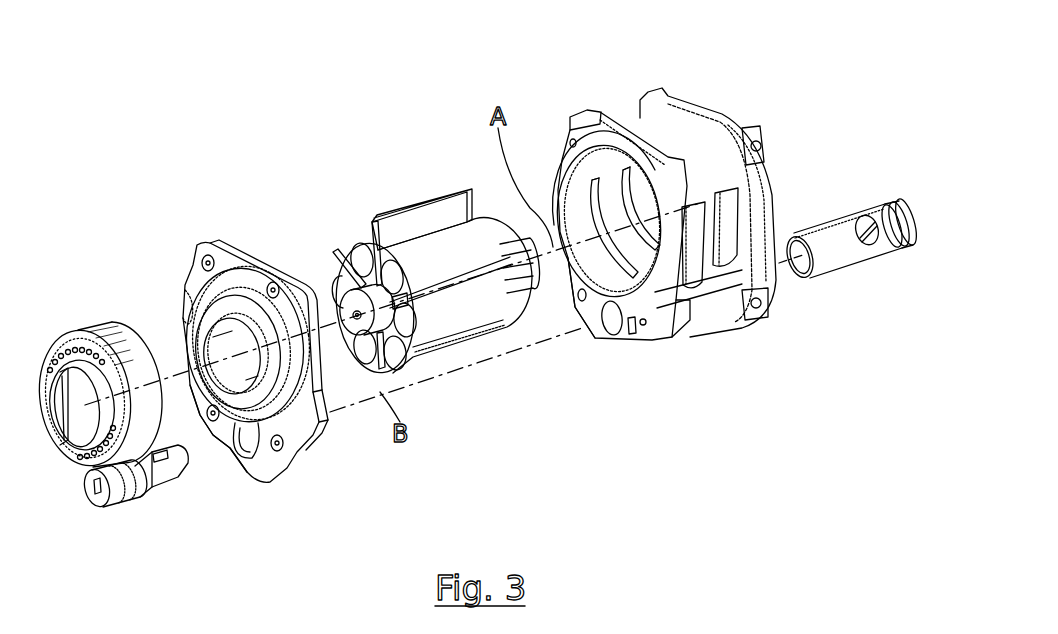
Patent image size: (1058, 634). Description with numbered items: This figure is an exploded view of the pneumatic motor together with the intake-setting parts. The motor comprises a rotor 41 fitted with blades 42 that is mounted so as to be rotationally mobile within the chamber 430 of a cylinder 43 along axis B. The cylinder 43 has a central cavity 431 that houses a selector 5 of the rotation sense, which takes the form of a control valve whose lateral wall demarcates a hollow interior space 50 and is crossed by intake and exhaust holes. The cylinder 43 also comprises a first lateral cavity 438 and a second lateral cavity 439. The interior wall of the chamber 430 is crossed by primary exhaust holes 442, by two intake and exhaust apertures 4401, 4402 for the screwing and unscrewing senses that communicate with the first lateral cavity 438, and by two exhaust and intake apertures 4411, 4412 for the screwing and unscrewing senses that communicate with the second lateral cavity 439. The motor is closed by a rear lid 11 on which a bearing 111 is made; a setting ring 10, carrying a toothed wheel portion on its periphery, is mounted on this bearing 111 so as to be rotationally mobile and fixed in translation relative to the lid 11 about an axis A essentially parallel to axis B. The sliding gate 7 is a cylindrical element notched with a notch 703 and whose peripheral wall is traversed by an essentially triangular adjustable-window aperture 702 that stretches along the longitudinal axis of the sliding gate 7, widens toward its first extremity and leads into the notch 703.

The setting ring 10 is at (101, 330).
The sliding gate 7 is at (140, 493).
The adjustable-window aperture 702 is at (160, 452).
The notch 703 is at (162, 478).
The rear lid 11 is at (253, 393).
The bearing 111 is at (267, 457).
The rotor 41 is at (453, 353).
The blades 42 is at (342, 252).
The cylinder 43 is at (720, 160).
The chamber 430 is at (575, 178).
The intake and exhaust aperture in the screwing sense 4401 is at (602, 160).
The intake and exhaust aperture in the unscrewing sense 4402 is at (630, 185).
The primary exhaust holes 442 is at (627, 182).
The exhaust and intake aperture in the screwing sense 4411 is at (695, 270).
The exhaust and intake aperture in the unscrewing sense 4412 is at (728, 205).
The first lateral cavity 438 is at (597, 322).
The central cavity 431 is at (617, 340).
The second lateral cavity 439 is at (640, 338).
The selector 5 is at (843, 268).
The hollow interior space 50 is at (803, 268).